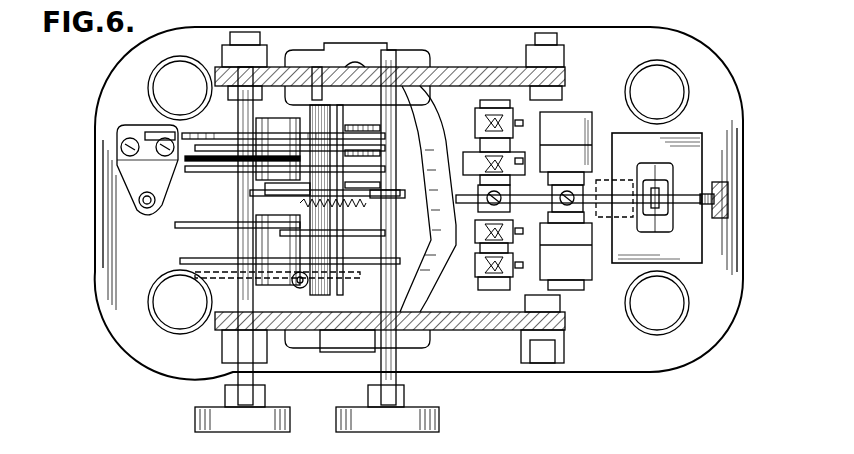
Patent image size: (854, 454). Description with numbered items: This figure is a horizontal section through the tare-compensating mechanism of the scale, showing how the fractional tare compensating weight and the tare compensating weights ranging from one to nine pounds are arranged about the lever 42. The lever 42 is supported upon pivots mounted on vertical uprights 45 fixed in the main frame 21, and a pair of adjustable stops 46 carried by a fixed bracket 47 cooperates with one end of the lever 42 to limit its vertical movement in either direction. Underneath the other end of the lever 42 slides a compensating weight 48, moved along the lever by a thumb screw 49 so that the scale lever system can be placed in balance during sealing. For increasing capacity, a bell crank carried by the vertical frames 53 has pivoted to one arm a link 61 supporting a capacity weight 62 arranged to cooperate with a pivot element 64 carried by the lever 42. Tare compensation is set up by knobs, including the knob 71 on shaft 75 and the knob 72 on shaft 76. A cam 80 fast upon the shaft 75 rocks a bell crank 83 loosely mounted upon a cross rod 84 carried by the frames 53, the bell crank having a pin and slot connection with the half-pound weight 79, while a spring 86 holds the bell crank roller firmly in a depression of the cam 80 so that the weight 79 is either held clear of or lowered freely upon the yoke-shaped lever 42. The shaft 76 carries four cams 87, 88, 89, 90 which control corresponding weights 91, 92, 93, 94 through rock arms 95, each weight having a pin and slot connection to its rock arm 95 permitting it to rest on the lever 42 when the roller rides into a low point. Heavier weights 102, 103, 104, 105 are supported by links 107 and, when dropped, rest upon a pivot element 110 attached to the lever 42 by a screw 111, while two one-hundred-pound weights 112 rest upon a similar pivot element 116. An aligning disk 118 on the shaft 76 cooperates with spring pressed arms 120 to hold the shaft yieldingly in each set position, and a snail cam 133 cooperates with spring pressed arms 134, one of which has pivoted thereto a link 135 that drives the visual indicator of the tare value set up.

The main frame 21 is at (494, 360).
The lever 42 is at (440, 222).
The vertical uprights 45 is at (378, 52).
The adjustable stops 46 is at (140, 206).
The fixed bracket 47 is at (125, 180).
The compensating weight 48 is at (600, 188).
The thumb screw 49 is at (716, 182).
The vertical frames 53 is at (468, 62).
The link 61 is at (658, 228).
The capacity weight 62 is at (690, 250).
The pivot element 64 is at (656, 172).
The knob 71 is at (430, 418).
The knob 72 is at (218, 425).
The shaft 75 is at (398, 375).
The shaft 76 is at (232, 376).
The weight 79 is at (366, 187).
The cam 80 is at (398, 196).
The bell crank 83 is at (292, 190).
The cross rod 84 is at (318, 100).
The spring 86 is at (325, 210).
The cam 87 is at (180, 261).
The cam 88 is at (178, 228).
The cam 89 is at (218, 172).
The cam 90 is at (214, 134).
The weight 91 is at (340, 272).
The weight 92 is at (366, 240).
The weight 93 is at (364, 156).
The weight 94 is at (364, 124).
The rock arm 95 is at (292, 132).
The weight 102 is at (478, 266).
The weight 103 is at (478, 238).
The weight 104 is at (464, 158).
The weight 105 is at (477, 122).
The links 107 is at (505, 130).
The pivot element 110 is at (504, 288).
The screw 111 is at (478, 198).
The weights 112 is at (580, 252).
The pivot element 116 is at (580, 282).
The aligning disk 118 is at (200, 265).
The spring pressed arms 120 is at (318, 340).
The snail cam 133 is at (188, 137).
The spring pressed arms 134 is at (150, 161).
The link 135 is at (135, 138).